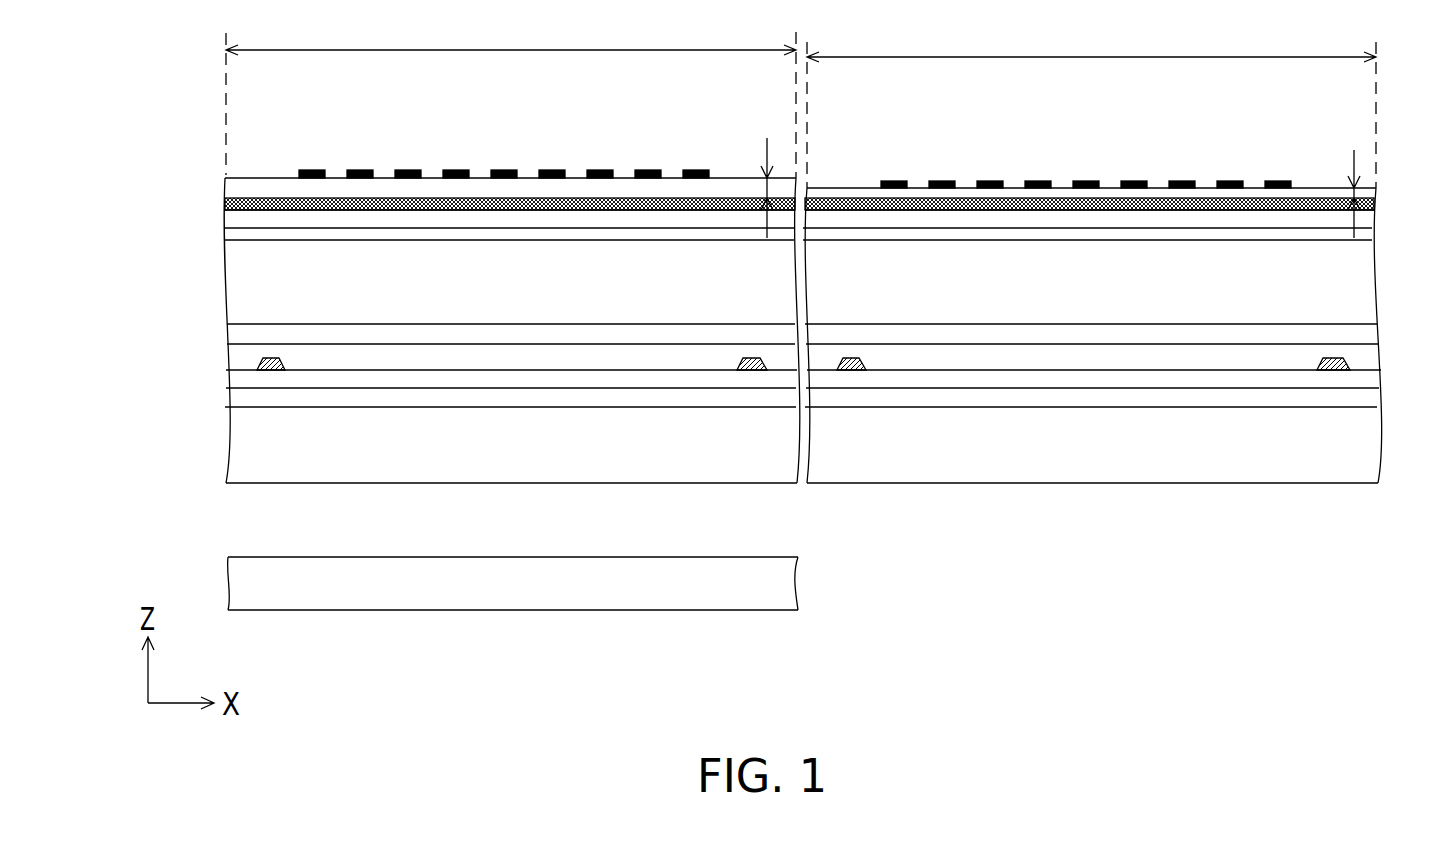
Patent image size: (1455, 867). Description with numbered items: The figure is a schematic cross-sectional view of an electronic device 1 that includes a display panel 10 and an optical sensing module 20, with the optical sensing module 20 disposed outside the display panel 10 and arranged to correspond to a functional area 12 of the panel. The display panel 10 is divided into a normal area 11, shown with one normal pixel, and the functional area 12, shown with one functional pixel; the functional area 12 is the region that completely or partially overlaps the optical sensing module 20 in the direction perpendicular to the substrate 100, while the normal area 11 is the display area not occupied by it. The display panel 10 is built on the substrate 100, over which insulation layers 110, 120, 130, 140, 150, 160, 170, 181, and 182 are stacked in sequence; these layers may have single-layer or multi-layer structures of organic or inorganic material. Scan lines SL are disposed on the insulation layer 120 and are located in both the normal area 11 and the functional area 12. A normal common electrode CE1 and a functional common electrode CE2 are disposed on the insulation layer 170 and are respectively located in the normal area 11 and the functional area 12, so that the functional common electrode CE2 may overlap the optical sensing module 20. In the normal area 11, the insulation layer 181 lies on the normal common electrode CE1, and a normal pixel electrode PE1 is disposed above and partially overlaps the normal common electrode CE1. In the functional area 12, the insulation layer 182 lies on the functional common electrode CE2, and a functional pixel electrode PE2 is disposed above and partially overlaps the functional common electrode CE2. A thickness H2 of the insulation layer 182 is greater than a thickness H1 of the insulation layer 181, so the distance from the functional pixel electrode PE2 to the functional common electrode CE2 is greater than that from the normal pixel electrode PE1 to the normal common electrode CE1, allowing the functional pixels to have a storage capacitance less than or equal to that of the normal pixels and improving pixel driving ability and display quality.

The electronic device 1 is at (1370, 703).
The display panel 10 is at (128, 170).
The normal area 11 is at (1091, 101).
The functional area 12 is at (511, 94).
The optical sensing module 20 is at (237, 577).
The substrate 100 is at (237, 450).
The insulation layer 110 is at (238, 398).
The insulation layer 120 is at (237, 375).
The insulation layer 130 is at (232, 360).
The insulation layer 140 is at (232, 333).
The insulation layer 150 is at (232, 283).
The insulation layer 160 is at (232, 235).
The insulation layer 170 is at (230, 222).
The insulation layer 181 is at (1376, 192).
The insulation layer 182 is at (238, 190).
The normal common electrode CE1 is at (1378, 205).
The functional common electrode CE2 is at (268, 200).
The normal pixel electrode PE1 is at (1232, 182).
The functional pixel electrode PE2 is at (360, 172).
The thickness H1 is at (1354, 188).
The thickness H2 is at (767, 188).
The scan lines SL is at (758, 372).